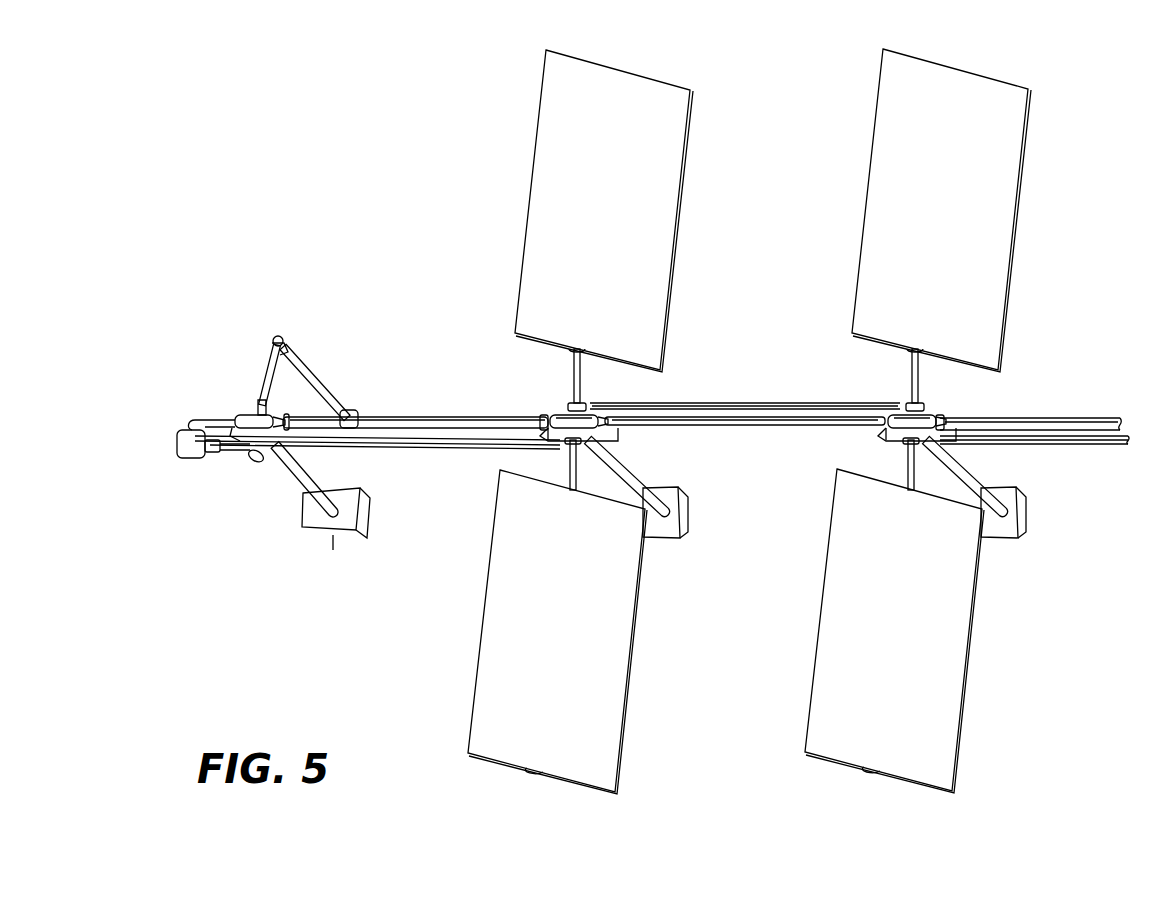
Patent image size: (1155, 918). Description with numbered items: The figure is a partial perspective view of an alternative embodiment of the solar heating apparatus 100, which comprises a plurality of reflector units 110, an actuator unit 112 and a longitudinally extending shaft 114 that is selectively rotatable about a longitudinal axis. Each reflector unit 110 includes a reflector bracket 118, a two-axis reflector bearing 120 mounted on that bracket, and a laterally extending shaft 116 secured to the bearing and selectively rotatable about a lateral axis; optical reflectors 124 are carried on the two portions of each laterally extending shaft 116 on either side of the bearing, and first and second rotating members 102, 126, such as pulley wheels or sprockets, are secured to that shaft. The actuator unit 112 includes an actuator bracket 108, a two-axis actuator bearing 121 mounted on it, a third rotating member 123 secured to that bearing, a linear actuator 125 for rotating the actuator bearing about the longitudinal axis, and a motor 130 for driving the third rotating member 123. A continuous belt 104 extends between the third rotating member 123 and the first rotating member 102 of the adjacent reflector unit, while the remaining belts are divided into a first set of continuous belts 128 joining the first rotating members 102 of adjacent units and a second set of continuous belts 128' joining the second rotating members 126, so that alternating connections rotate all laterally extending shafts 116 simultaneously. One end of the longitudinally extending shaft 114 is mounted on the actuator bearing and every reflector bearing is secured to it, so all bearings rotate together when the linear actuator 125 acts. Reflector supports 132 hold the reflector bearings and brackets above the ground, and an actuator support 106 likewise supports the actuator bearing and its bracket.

The solar heating apparatus 100 is at (484, 124).
The first rotating member 102 is at (604, 443).
The continuous belt 104 is at (378, 452).
The actuator support 106 is at (334, 547).
The actuator bracket 108 is at (290, 395).
The reflector unit 110 is at (719, 311).
The actuator unit 112 is at (271, 557).
The longitudinally extending shaft 114 is at (450, 416).
The laterally extending shaft 116 is at (574, 378).
The reflector bracket 118 is at (640, 430).
The two-axis reflector bearing 120 is at (552, 415).
The two-axis actuator bearing 121 is at (244, 413).
The third rotating member 123 is at (256, 463).
The optical reflector 124 is at (664, 200).
The linear actuator 125 is at (346, 392).
The second rotating member 126 is at (584, 404).
The first set of continuous belts 128 is at (1034, 468).
The second set of continuous belts 128' is at (745, 386).
The motor 130 is at (182, 460).
The reflector support 132 is at (684, 530).